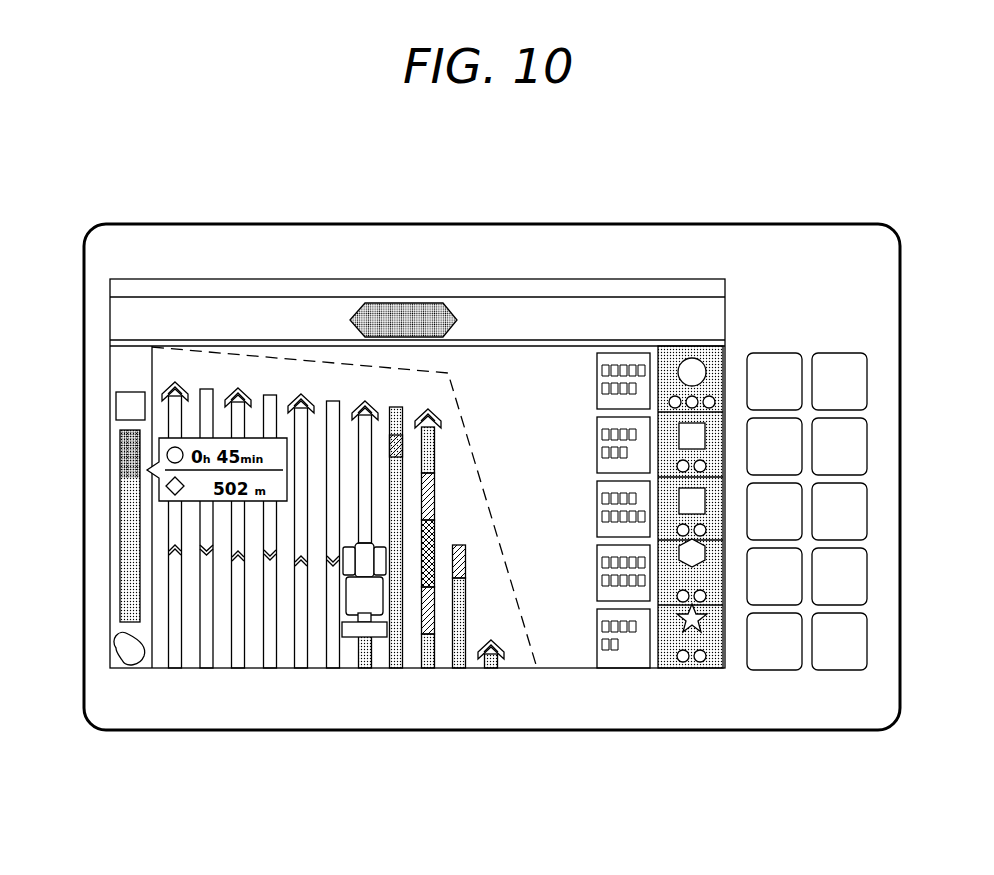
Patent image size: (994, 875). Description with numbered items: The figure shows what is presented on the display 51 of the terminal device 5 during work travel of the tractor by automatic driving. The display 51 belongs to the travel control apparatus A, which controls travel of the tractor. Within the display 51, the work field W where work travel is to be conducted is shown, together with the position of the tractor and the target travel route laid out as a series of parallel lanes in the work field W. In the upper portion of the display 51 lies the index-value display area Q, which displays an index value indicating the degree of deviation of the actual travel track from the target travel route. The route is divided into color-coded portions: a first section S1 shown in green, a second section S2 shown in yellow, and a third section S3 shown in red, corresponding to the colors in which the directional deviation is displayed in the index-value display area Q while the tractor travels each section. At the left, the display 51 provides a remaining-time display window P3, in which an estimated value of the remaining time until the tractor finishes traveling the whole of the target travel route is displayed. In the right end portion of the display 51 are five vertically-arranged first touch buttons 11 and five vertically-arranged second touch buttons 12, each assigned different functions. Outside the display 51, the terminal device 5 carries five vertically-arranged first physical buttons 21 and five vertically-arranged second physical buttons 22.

The terminal device 5 is at (127, 200).
The display 51 is at (258, 278).
The travel control apparatus A is at (417, 418).
The work field W is at (305, 362).
The index-value display area Q is at (407, 298).
The remaining-time display window P3 is at (124, 378).
The first touch buttons 11 is at (626, 338).
The second touch buttons 12 is at (694, 338).
The first physical buttons 21 is at (773, 348).
The second physical buttons 22 is at (844, 348).
The first section S1 is at (430, 647).
The second section S2 is at (430, 607).
The third section S3 is at (433, 533).